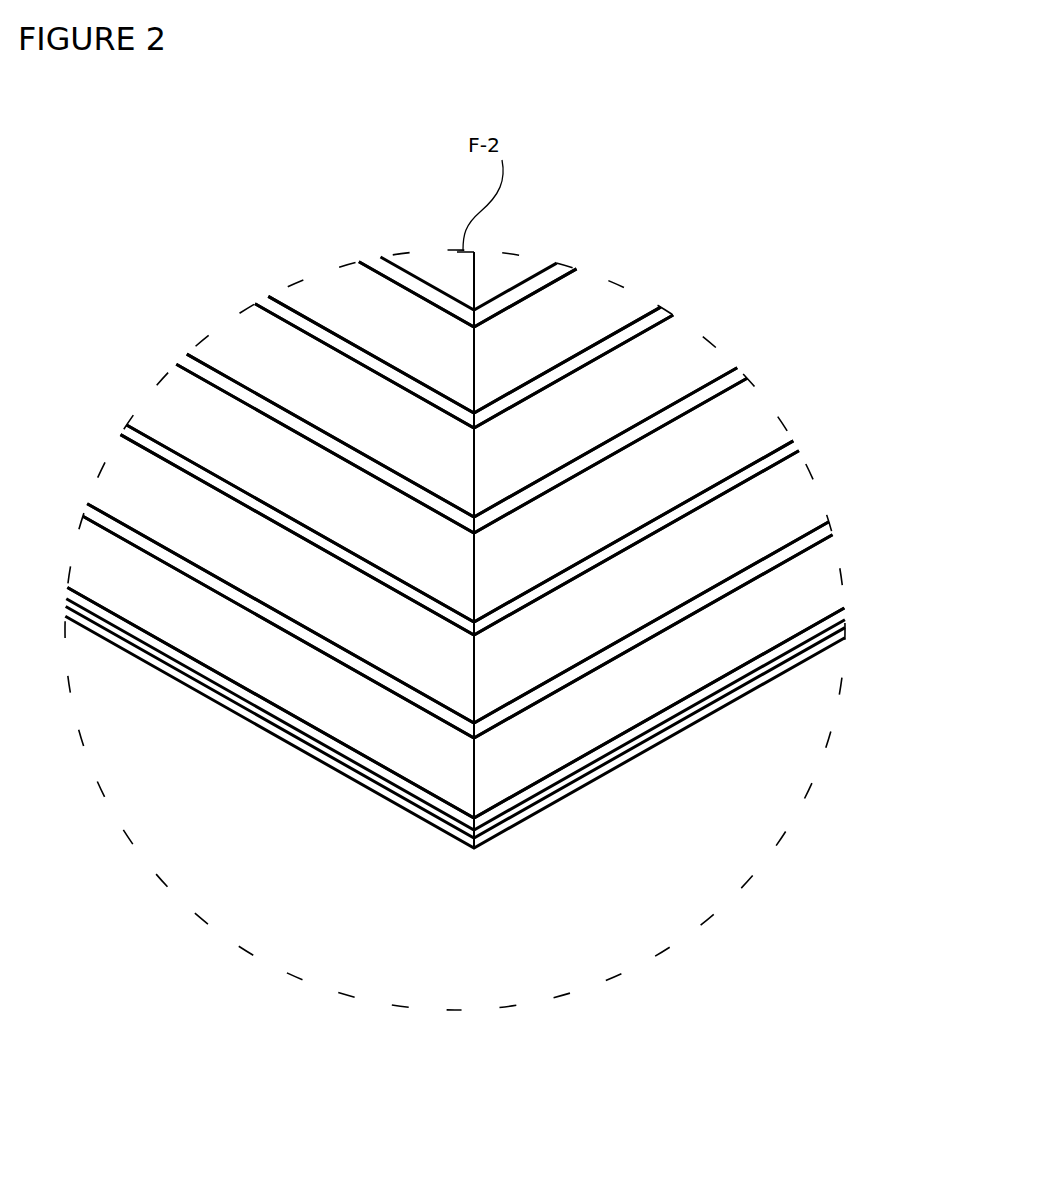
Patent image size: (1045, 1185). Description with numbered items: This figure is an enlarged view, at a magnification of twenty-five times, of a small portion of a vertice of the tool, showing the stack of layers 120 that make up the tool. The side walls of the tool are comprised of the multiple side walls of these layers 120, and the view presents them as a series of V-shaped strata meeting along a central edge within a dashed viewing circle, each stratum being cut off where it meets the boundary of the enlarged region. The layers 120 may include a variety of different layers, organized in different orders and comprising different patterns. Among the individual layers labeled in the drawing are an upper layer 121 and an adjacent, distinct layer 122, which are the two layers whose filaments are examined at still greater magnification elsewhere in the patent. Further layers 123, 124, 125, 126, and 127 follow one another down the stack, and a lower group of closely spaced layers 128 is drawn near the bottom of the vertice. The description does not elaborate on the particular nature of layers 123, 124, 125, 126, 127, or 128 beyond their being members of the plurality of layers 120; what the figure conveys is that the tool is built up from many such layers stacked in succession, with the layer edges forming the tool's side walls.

The layers 120 is at (693, 188).
The upper layer 121 is at (670, 308).
The layer 122 is at (710, 338).
The third layer 123 is at (772, 403).
The fourth layer 124 is at (785, 423).
The fifth layer 125 is at (818, 487).
The sixth layer 126 is at (830, 522).
The seventh layer 127 is at (845, 578).
The bottom layer group 128 is at (637, 750).